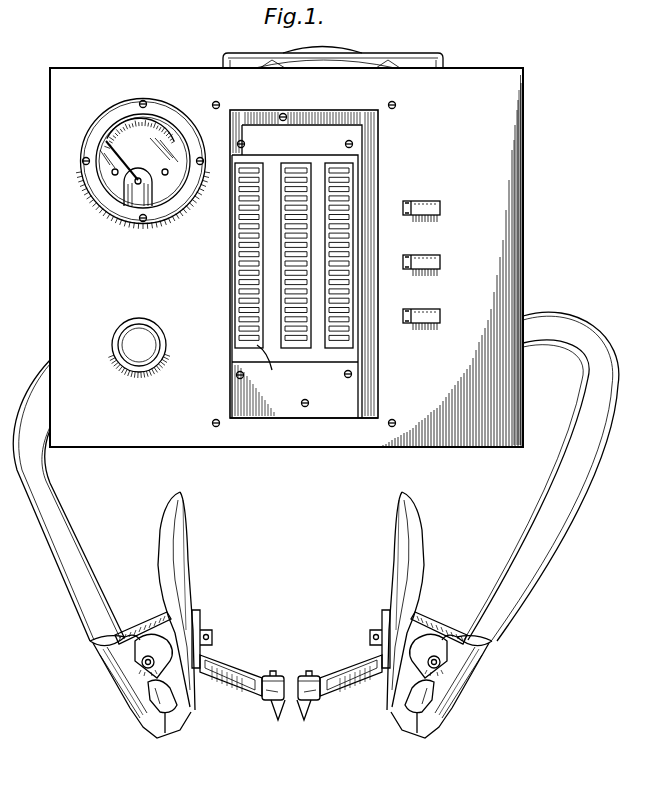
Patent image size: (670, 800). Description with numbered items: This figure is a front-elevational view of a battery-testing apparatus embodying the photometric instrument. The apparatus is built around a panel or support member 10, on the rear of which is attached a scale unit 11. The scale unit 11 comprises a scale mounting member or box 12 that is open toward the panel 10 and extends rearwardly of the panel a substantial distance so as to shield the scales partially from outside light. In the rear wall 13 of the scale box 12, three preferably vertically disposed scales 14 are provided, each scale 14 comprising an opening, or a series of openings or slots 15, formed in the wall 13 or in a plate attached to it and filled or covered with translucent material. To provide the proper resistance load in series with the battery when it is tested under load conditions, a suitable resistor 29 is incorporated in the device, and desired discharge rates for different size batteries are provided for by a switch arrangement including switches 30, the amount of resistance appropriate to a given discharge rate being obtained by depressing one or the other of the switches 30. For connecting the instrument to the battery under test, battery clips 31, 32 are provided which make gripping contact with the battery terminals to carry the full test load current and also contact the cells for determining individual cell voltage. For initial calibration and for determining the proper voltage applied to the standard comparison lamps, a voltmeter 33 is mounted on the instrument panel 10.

The panel 10 is at (524, 146).
The scale unit 11 is at (347, 413).
The scale mounting member or box 12 is at (376, 152).
The rear wall 13 is at (295, 286).
The scales 14 is at (337, 163).
The slots 15 is at (255, 348).
The resistor 29 is at (436, 52).
The switches 30 is at (441, 207).
The battery clip 31 is at (142, 633).
The battery clip 32 is at (442, 633).
The voltmeter 33 is at (92, 120).